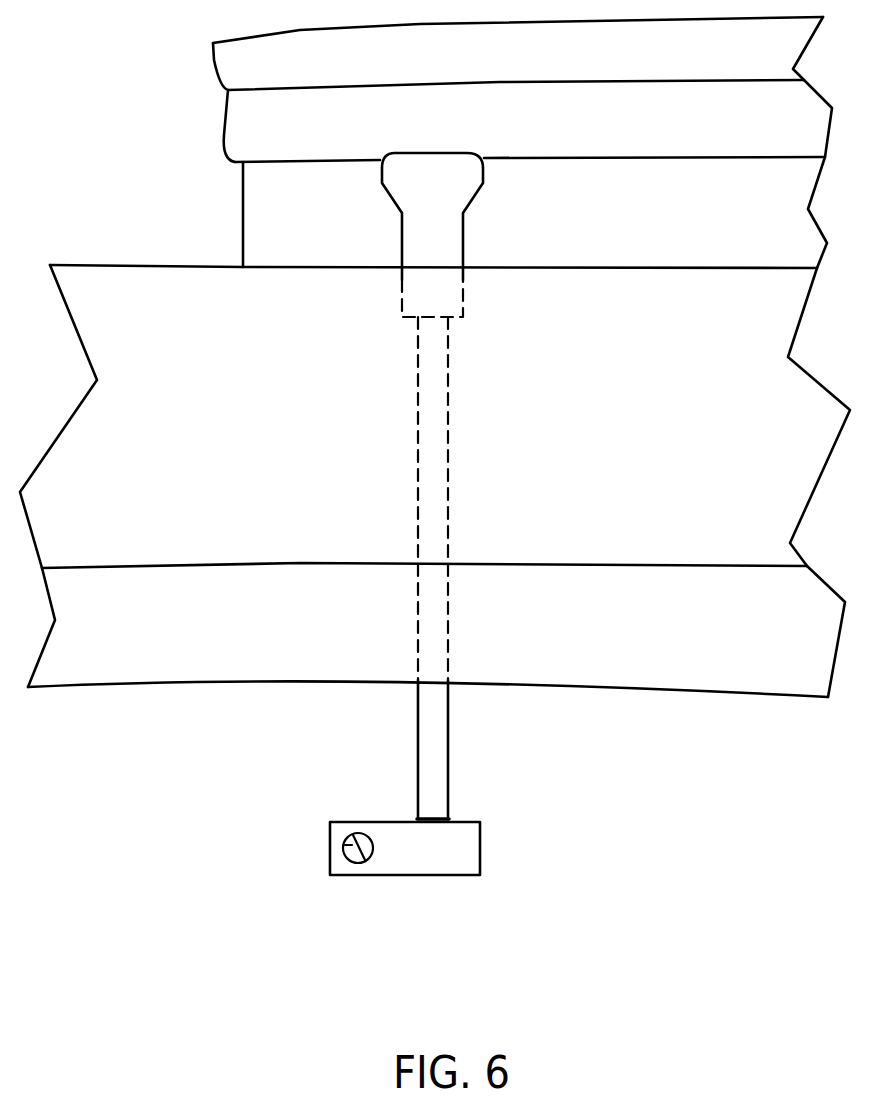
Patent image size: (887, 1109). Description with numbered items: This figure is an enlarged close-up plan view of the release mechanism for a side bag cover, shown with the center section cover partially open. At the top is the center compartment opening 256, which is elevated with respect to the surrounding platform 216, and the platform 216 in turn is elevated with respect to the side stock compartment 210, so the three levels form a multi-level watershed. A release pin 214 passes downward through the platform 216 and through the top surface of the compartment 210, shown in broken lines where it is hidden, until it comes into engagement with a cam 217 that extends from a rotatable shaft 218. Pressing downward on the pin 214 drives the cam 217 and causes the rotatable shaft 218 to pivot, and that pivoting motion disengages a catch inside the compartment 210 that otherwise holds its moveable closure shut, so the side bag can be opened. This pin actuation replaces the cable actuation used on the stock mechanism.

The side stock compartment 210 is at (163, 663).
The release pin 214 is at (457, 237).
The platform 216 is at (150, 282).
The cam 217 is at (458, 857).
The rotatable shaft 218 is at (343, 846).
The center compartment opening 256 is at (247, 135).